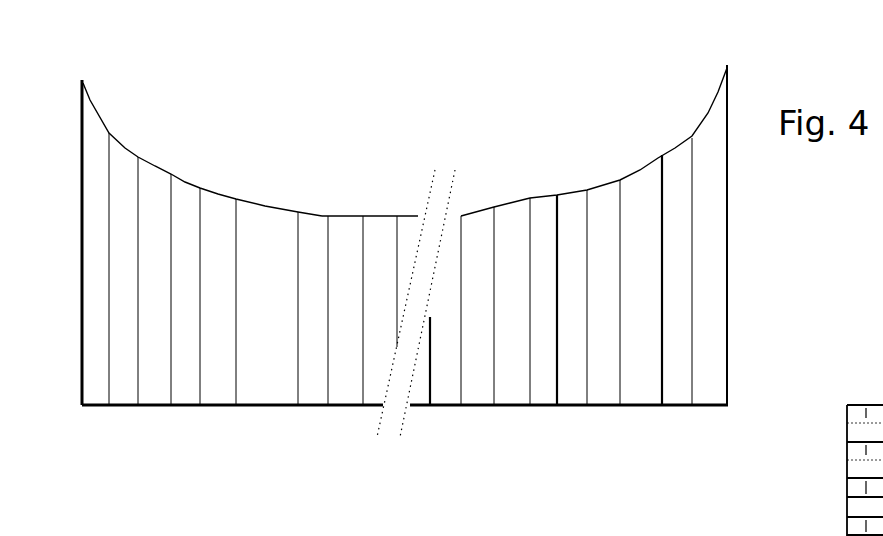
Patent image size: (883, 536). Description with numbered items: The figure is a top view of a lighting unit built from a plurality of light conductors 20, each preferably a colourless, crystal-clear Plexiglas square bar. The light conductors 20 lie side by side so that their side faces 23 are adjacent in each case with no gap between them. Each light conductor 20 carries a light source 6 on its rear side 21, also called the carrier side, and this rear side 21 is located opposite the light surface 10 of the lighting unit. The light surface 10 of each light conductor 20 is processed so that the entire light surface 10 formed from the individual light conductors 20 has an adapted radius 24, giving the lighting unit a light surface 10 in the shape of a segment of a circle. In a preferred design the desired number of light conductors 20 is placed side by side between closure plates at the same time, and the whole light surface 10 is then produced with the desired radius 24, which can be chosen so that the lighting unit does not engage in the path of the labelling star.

The light surface 10 is at (510, 203).
The light conductor 20 is at (288, 387).
The rear side 21 is at (710, 412).
The side face 23 is at (665, 332).
The adapted radius 24 is at (322, 217).
The light source 6 is at (43, 525).